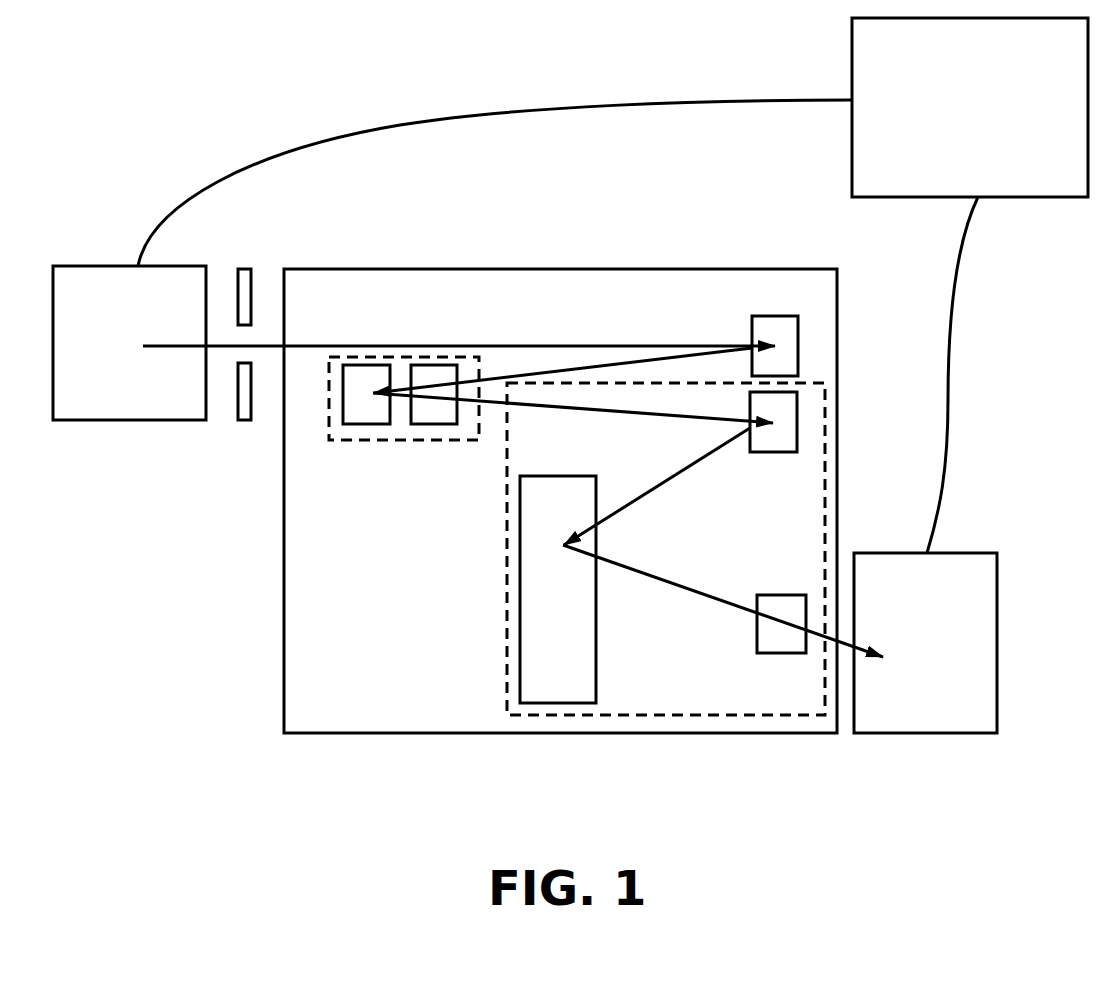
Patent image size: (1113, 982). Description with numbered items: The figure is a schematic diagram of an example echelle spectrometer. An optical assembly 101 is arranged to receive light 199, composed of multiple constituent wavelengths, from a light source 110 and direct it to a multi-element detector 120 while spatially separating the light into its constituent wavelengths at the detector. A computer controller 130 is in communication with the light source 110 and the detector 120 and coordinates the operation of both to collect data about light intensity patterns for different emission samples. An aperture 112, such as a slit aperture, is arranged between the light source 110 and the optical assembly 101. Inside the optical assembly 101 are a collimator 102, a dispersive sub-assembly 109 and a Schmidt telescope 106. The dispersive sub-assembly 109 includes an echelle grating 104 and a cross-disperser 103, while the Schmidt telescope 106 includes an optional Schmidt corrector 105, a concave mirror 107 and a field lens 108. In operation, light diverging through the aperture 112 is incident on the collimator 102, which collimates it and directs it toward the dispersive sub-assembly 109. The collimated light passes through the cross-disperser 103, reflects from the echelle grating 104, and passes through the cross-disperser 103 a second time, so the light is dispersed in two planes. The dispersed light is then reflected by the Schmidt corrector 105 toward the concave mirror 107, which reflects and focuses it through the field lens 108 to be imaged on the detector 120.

The light source 110 is at (158, 421).
The aperture 112 is at (250, 265).
The computer controller 130 is at (1030, 198).
The multi-element detector 120 is at (997, 663).
The optical assembly 101 is at (418, 734).
The light 199 is at (360, 345).
The dispersive sub-assembly 109 is at (397, 442).
The echelle grating 104 is at (360, 424).
The cross-disperser 103 is at (435, 424).
The collimator 102 is at (752, 333).
The Schmidt corrector 105 is at (750, 402).
The Schmidt telescope 106 is at (678, 715).
The concave mirror 107 is at (570, 653).
The field lens 108 is at (775, 655).